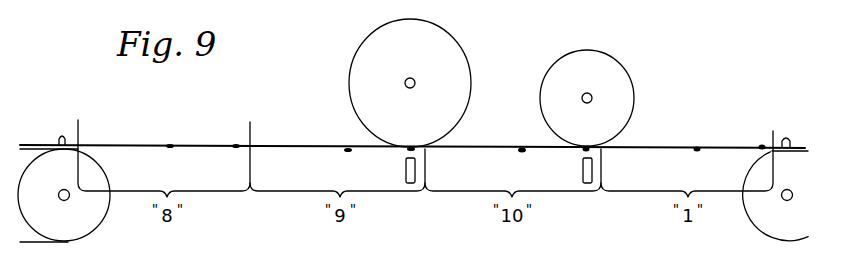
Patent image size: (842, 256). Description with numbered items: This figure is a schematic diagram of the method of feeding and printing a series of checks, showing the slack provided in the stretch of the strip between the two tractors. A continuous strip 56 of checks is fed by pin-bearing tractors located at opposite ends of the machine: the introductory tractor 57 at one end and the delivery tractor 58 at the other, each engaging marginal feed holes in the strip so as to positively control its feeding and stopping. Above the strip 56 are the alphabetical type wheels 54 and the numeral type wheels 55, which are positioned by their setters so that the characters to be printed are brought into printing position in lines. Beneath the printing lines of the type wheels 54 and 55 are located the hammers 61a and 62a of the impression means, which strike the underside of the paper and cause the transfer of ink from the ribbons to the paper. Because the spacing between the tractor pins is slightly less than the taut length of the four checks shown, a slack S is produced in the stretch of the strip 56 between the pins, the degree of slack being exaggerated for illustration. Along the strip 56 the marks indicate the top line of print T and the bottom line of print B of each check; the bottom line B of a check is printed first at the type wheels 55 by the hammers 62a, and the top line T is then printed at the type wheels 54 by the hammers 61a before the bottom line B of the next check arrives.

The type wheels 54 is at (368, 56).
The type wheels 55 is at (622, 97).
The continuous strip of checks 56 is at (797, 145).
The introductory tractor 57 is at (801, 153).
The delivery tractor 58 is at (25, 150).
The hammers 61a is at (405, 170).
The hammers 62a is at (581, 172).
The top line of print T is at (423, 130).
The bottom line of print B is at (489, 139).
The slack S is at (285, 147).